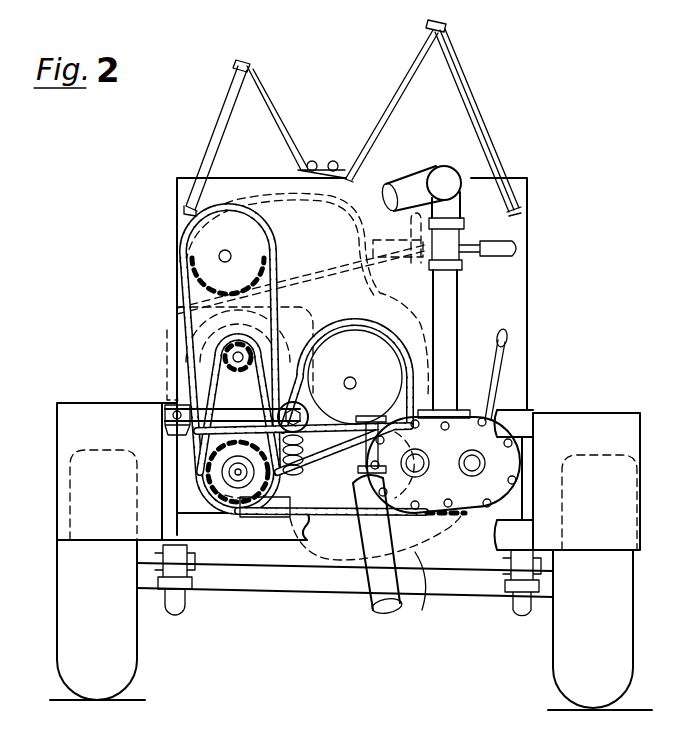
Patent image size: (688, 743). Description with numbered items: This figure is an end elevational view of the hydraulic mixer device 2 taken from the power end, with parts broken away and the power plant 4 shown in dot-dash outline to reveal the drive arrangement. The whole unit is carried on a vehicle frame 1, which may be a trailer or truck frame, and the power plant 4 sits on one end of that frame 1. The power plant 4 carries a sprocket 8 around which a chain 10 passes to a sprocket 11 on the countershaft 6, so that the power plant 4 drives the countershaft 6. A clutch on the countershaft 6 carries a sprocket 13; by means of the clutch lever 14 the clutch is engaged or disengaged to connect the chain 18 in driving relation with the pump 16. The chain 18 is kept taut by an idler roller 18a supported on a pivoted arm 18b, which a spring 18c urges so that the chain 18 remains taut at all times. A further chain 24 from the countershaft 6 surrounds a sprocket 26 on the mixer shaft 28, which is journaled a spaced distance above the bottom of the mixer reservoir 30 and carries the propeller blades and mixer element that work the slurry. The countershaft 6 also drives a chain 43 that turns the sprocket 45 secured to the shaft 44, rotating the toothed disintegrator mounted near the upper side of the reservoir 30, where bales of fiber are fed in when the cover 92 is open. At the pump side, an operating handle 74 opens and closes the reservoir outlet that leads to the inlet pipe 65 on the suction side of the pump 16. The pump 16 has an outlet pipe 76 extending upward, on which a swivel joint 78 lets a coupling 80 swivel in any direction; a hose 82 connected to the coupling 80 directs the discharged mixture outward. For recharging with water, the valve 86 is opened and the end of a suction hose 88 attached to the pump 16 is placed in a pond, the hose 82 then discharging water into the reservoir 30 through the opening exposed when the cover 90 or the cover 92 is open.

The vehicle frame 1 is at (539, 401).
The hydraulic mixer device 2 is at (168, 197).
The power plant 4 is at (168, 325).
The countershaft 6 is at (238, 474).
The sprocket 8 is at (236, 378).
The chain 10 is at (222, 470).
The sprocket 11 is at (210, 454).
The sprocket 13 is at (215, 478).
The clutch lever 14 is at (507, 346).
The pump 16 is at (512, 468).
The chain 18 is at (334, 514).
The idler roller 18a is at (305, 410).
The pivoted arm 18b is at (166, 416).
The spring 18c is at (331, 499).
The chain 24 is at (356, 323).
The sprocket 26 is at (366, 366).
The mixer shaft 28 is at (356, 382).
The mixer reservoir 30 is at (518, 388).
The chain 43 is at (187, 287).
The shaft 44 is at (184, 252).
The sprocket 45 is at (219, 256).
The inlet pipe 65 is at (423, 604).
The operating handle 74 is at (520, 248).
The outlet pipe 76 is at (452, 330).
The swivel joint 78 is at (460, 240).
The coupling 80 is at (463, 176).
The hose 82 is at (408, 180).
The valve 86 is at (380, 458).
The suction hose 88 is at (377, 605).
The cover 90 is at (406, 77).
The cover 92 is at (277, 120).